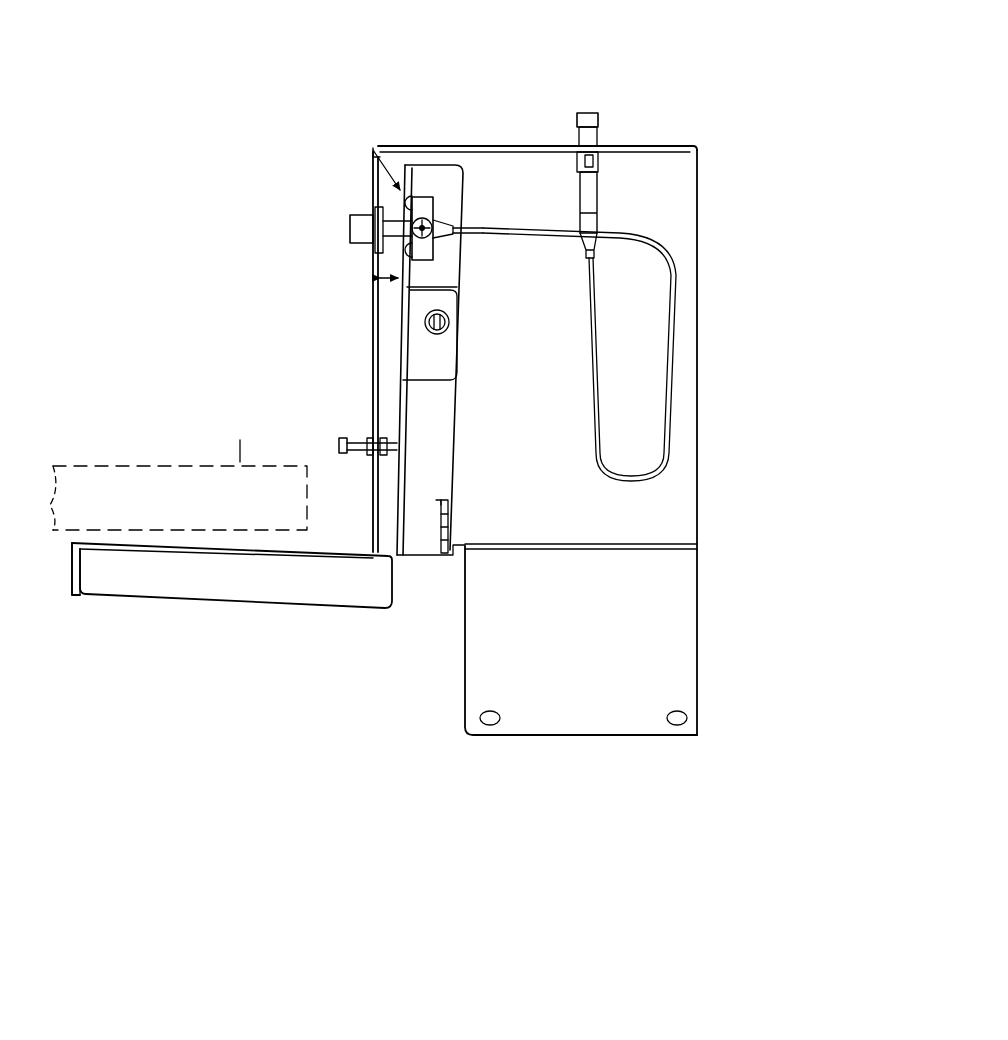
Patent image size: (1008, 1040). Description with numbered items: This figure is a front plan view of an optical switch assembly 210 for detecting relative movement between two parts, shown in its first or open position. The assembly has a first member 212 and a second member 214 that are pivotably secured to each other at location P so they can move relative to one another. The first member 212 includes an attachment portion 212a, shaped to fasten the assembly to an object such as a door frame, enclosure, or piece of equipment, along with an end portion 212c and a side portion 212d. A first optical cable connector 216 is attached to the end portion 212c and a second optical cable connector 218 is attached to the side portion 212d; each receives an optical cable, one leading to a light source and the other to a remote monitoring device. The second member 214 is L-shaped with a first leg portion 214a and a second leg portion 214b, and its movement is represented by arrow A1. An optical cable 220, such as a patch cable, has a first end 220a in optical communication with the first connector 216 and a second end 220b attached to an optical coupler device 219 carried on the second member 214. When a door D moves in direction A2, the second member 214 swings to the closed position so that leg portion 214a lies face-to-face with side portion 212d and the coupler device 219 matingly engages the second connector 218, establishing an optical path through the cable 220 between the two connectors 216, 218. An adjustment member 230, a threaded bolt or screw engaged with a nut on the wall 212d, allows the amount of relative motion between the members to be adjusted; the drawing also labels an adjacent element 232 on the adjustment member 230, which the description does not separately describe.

The optical switch assembly 210 is at (770, 74).
The first member 212 is at (703, 512).
The attachment portion 212a is at (660, 617).
The end portion 212c is at (630, 146).
The side portion 212d is at (370, 353).
The second member 214 is at (350, 614).
The first leg portion 214a is at (403, 415).
The second leg portion 214b is at (112, 583).
The first optical cable connector 216 is at (597, 105).
The second optical cable connector 218 is at (360, 216).
The optical coupler device 219 is at (429, 190).
The optical cable 220 is at (682, 325).
The optical cable first end 220a is at (598, 226).
The optical cable second end 220b is at (456, 226).
The adjustment member 230 is at (334, 437).
The pin washer 232 is at (362, 434).
The pivot location P is at (450, 325).
The arrow A1 is at (386, 282).
The direction A2 is at (240, 460).
The door D is at (128, 463).